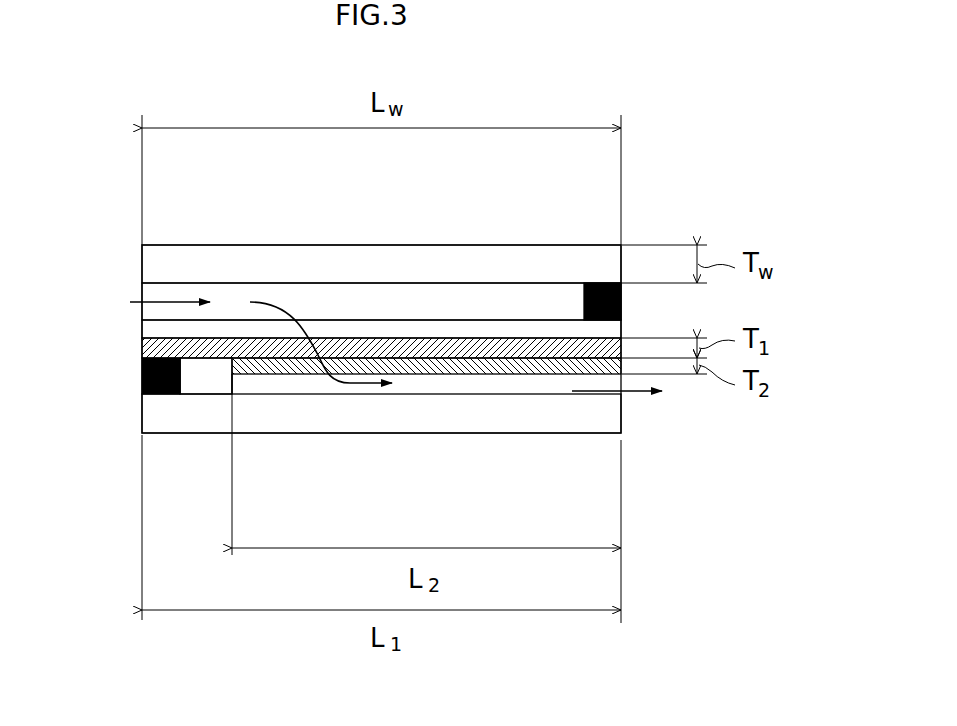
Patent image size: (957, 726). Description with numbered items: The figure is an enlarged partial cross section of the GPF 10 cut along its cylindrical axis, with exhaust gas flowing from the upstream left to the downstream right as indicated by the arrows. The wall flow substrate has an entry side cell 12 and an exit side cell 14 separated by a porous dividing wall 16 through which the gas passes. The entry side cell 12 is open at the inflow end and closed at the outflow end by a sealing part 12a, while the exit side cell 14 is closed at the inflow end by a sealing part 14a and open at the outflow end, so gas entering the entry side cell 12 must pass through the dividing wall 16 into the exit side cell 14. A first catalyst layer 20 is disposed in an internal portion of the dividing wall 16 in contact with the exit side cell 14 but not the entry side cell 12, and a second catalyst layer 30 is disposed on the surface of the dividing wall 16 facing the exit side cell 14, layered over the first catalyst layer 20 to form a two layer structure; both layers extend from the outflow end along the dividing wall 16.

The GPF 10 is at (680, 176).
The entry side cell 12 is at (465, 302).
The sealing part 12a is at (622, 297).
The exit side cell 14 is at (495, 385).
The sealing part 14a is at (140, 372).
The dividing wall 16 is at (352, 317).
The first catalyst layer 20 is at (207, 359).
The second catalyst layer 30 is at (292, 376).